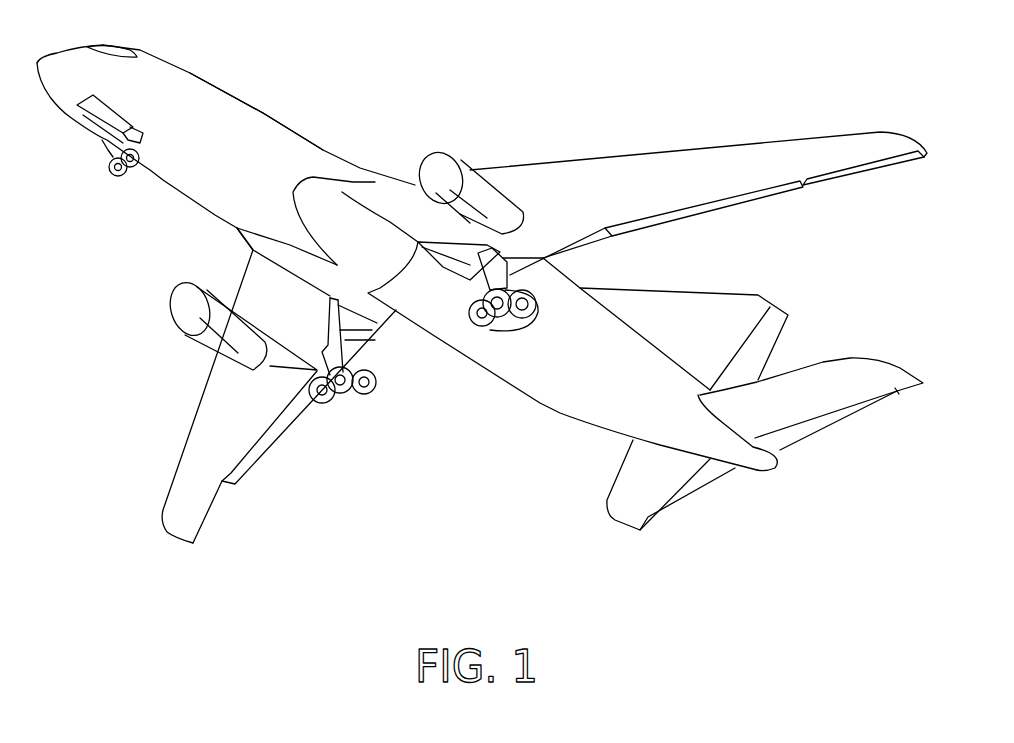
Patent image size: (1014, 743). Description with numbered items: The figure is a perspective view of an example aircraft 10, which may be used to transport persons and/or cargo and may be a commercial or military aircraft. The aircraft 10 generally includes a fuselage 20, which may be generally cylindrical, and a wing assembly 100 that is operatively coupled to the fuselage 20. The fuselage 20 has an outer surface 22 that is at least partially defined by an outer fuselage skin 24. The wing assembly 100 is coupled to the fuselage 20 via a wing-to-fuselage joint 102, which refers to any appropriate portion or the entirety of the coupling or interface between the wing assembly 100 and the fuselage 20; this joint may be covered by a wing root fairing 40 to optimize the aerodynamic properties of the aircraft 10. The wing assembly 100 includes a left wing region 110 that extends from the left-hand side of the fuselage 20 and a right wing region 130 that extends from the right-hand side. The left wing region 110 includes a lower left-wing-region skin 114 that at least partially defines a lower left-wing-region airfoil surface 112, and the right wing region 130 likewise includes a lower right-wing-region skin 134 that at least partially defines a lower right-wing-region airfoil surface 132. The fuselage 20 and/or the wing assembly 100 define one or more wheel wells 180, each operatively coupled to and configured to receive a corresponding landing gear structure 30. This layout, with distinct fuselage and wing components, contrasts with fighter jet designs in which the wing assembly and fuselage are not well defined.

The aircraft 10 is at (459, 66).
The fuselage 20 is at (265, 108).
The outer surface 22 is at (283, 141).
The outer fuselage skin 24 is at (307, 163).
The landing gear structure 30 is at (130, 177).
The wing root fairing 40 is at (327, 208).
The wing assembly 100 is at (500, 142).
The wing-to-fuselage joint 102 is at (236, 245).
The left wing region 110 is at (657, 144).
The lower left-wing-region airfoil surface 112 is at (693, 162).
The lower left-wing-region skin 114 is at (727, 175).
The right wing region 130 is at (205, 373).
The lower right-wing-region airfoil surface 132 is at (211, 412).
The lower right-wing-region skin 134 is at (210, 442).
The wheel well 180 is at (92, 131).